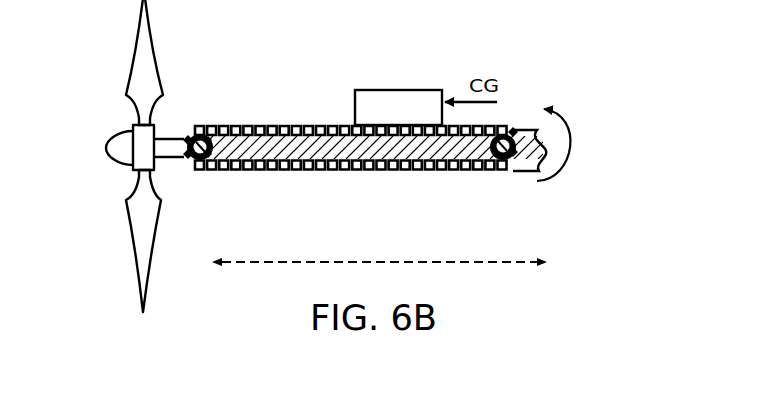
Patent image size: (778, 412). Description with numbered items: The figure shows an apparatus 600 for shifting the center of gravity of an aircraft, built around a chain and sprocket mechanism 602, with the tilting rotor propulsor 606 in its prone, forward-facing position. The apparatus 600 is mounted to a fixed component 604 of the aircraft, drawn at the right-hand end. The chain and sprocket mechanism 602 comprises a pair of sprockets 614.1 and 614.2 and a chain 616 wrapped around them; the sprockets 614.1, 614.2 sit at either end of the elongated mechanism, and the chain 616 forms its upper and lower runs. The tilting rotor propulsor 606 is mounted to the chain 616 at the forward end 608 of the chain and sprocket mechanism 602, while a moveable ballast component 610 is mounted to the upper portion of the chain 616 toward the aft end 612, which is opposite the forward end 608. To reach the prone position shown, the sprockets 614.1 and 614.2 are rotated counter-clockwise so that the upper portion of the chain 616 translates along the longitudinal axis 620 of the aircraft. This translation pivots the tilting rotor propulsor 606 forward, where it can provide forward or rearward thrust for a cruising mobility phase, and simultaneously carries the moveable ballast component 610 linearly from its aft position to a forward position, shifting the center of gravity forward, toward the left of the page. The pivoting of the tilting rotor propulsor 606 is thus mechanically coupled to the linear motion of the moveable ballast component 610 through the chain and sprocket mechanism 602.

The apparatus 600 is at (541, 33).
The chain and sprocket mechanism 602 is at (226, 107).
The fixed component 604 is at (523, 169).
The tilting rotor propulsor 606 is at (118, 133).
The forward end 608 is at (84, 163).
The moveable ballast component 610 is at (365, 90).
The aft end 612 is at (610, 110).
The sprocket 614.1 is at (207, 165).
The sprocket 614.2 is at (504, 167).
The chain 616 is at (343, 170).
The longitudinal axis 620 is at (241, 261).